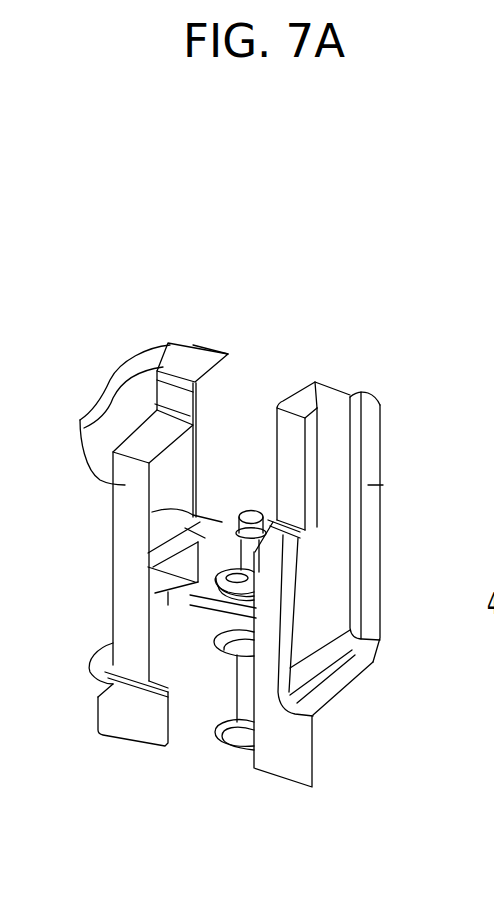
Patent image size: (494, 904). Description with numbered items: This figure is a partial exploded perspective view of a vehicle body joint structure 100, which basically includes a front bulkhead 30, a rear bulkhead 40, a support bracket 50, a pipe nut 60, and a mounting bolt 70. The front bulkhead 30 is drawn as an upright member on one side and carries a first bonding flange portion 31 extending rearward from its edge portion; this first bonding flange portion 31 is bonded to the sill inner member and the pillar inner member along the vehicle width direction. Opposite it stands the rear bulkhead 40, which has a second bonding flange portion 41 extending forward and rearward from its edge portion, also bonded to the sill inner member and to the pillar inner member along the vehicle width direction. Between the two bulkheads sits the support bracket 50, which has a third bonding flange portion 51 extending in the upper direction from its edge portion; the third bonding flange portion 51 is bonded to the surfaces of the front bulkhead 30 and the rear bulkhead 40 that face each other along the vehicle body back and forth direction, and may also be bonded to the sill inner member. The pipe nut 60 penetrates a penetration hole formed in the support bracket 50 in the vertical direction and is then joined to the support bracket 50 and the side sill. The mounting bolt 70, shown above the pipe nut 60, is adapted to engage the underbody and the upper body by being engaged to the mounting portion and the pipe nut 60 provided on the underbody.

The vehicle body joint structure 100 is at (282, 237).
The front bulkhead 30 is at (107, 597).
The first bonding flange portion 31 is at (84, 427).
The third bonding flange portion 51 is at (152, 512).
The support bracket 50 is at (190, 614).
The mounting bolt 70 is at (228, 518).
The pipe nut 60 is at (220, 648).
The rear bulkhead 40 is at (388, 548).
The second bonding flange portion 41 is at (270, 572).